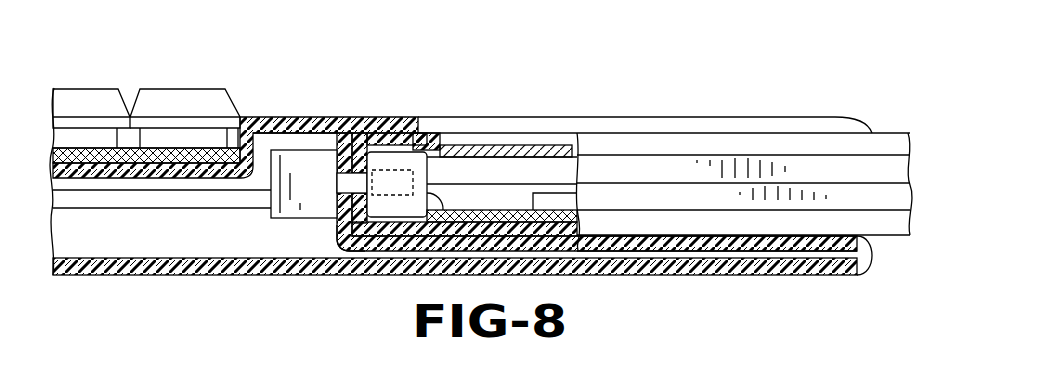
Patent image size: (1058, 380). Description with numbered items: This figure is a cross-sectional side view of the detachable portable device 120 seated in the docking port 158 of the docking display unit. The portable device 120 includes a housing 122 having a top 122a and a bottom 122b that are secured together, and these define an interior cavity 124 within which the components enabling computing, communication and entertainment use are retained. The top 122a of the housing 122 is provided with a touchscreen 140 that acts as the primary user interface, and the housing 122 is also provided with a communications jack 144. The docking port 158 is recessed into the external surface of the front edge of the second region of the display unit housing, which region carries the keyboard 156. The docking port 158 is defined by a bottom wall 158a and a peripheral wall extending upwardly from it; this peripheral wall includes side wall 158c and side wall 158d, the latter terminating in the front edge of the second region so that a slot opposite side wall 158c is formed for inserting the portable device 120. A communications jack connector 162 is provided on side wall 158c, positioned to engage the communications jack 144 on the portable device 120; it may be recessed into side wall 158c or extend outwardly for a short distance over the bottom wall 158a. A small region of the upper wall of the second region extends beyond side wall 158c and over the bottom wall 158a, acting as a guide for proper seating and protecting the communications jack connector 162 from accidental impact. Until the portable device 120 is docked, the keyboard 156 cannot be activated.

The keyboard 156 is at (88, 84).
The communications jack connector 162 is at (302, 163).
The communications jack 144 is at (390, 163).
The touchscreen 140 is at (472, 145).
The interior cavity 124 is at (530, 167).
The top 122a is at (633, 167).
The docking port 158 is at (677, 110).
The side wall 158d is at (742, 122).
The detachable portable device 120 is at (794, 119).
The housing 122 is at (889, 125).
The side wall 158c is at (355, 206).
The bottom wall 158a is at (668, 236).
The bottom 122b is at (765, 222).